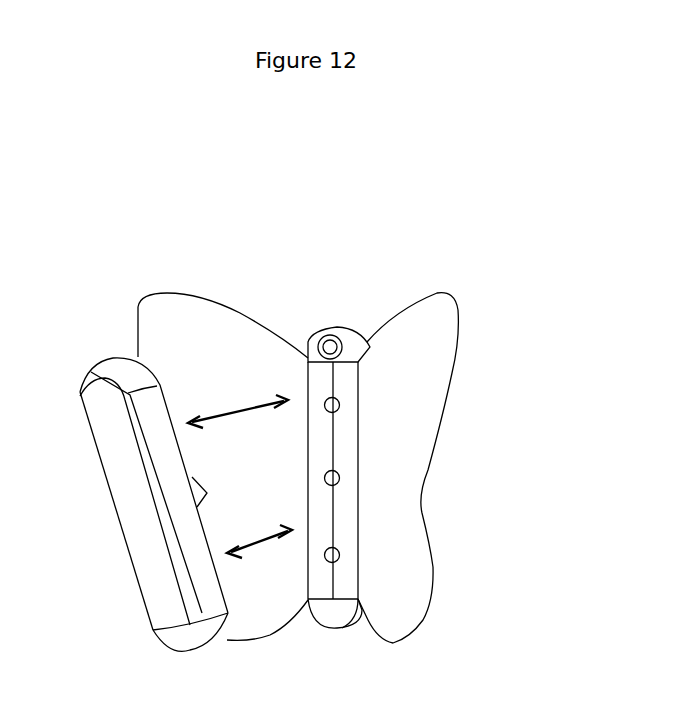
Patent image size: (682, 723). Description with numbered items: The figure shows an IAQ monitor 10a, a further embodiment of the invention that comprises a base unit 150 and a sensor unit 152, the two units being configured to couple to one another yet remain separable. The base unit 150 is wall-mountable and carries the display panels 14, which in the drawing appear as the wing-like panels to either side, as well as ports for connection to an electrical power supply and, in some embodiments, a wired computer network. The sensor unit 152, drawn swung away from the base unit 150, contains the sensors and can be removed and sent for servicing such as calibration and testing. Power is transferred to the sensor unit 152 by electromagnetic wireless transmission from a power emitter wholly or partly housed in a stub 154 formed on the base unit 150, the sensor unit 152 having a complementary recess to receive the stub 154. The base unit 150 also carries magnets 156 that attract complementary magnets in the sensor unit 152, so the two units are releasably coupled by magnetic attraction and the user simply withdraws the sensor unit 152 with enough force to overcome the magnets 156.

The IAQ monitor 10a is at (508, 368).
The display panels 14 is at (445, 423).
The base unit 150 is at (359, 328).
The sensor unit 152 is at (82, 388).
The stub 154 is at (320, 343).
The magnets 156 is at (337, 410).